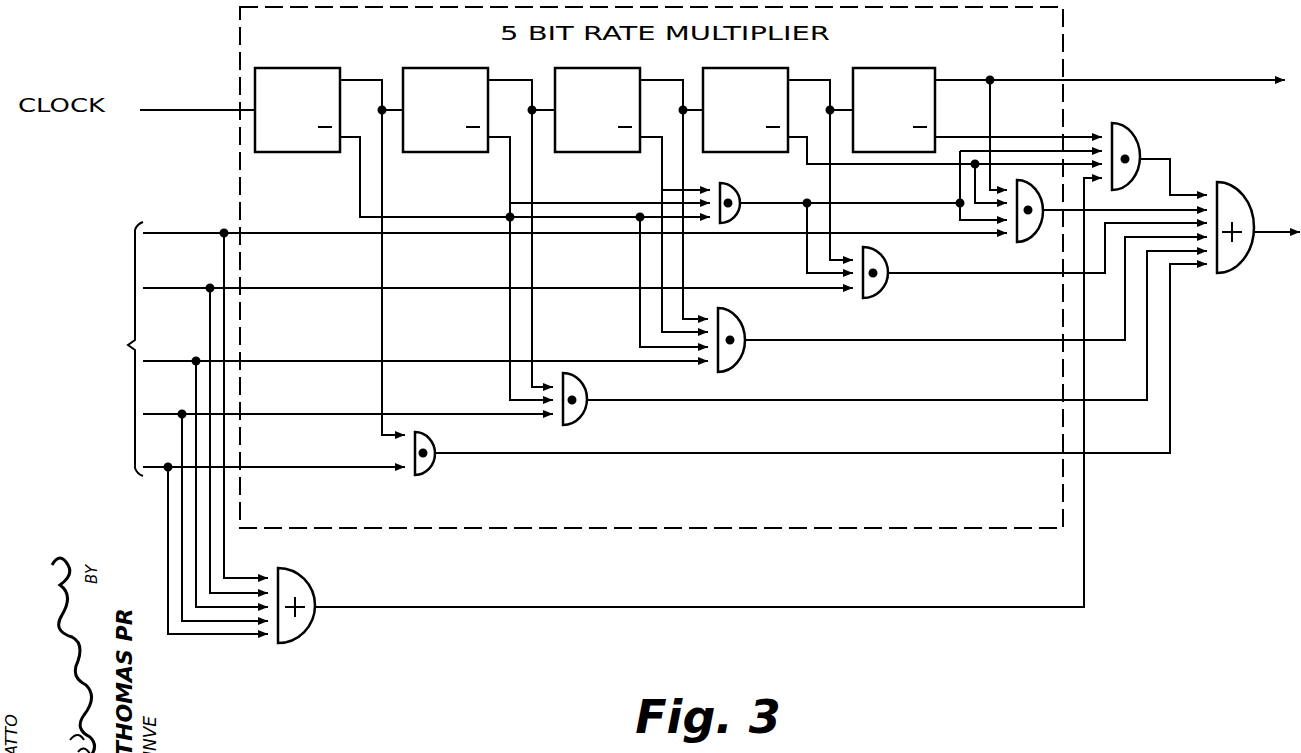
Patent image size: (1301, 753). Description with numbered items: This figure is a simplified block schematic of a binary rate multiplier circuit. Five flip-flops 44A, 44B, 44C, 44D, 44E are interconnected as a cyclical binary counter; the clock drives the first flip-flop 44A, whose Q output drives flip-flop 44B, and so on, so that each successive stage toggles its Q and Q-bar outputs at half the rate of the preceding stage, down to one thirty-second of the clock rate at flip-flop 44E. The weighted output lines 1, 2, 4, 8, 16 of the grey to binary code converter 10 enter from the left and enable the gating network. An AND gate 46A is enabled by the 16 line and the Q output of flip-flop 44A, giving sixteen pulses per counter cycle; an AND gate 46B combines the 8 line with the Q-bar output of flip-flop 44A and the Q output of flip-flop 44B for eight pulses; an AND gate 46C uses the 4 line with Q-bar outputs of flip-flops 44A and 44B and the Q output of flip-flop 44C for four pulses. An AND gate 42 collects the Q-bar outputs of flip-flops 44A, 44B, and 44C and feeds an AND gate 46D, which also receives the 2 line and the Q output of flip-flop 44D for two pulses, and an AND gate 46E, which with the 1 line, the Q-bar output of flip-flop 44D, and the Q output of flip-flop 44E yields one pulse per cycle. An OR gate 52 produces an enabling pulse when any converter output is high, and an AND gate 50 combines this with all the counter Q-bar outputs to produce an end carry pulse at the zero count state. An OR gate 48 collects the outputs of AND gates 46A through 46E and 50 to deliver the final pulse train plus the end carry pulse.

The grey to binary code converter 10 is at (80, 349).
The 1 output line of the code converter 1 is at (165, 236).
The 2 output line of the code converter 2 is at (165, 292).
The 4 output line of the code converter 4 is at (163, 364).
The 8 output line of the code converter 8 is at (159, 418).
The 16 output line of the code converter 16 is at (155, 470).
The first flip-flop 44A is at (302, 69).
The second flip-flop 44B is at (454, 69).
The third flip-flop 44C is at (606, 69).
The fourth flip-flop 44D is at (742, 69).
The fifth flip-flop 44E is at (897, 69).
The AND gate 42 is at (732, 187).
The AND gate 46A is at (427, 433).
The AND gate 46B is at (585, 374).
The AND gate 46C is at (738, 309).
The AND gate 46D is at (877, 248).
The AND gate 46E is at (1037, 240).
The OR gate 48 is at (1233, 185).
The AND gate 50 is at (1125, 126).
The OR gate 52 is at (302, 572).